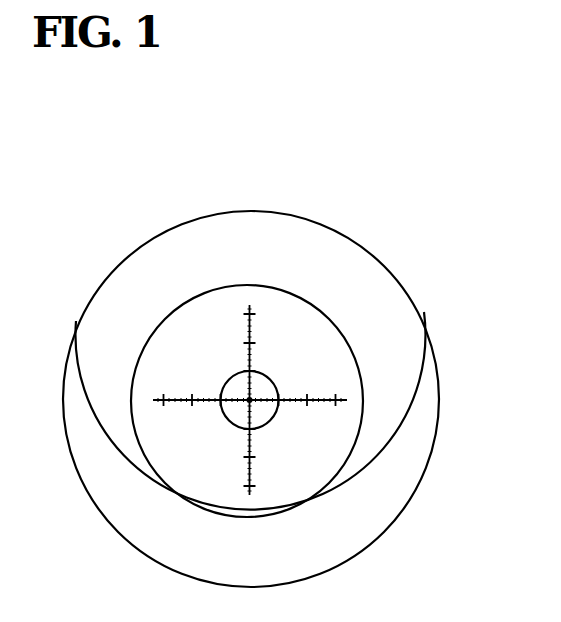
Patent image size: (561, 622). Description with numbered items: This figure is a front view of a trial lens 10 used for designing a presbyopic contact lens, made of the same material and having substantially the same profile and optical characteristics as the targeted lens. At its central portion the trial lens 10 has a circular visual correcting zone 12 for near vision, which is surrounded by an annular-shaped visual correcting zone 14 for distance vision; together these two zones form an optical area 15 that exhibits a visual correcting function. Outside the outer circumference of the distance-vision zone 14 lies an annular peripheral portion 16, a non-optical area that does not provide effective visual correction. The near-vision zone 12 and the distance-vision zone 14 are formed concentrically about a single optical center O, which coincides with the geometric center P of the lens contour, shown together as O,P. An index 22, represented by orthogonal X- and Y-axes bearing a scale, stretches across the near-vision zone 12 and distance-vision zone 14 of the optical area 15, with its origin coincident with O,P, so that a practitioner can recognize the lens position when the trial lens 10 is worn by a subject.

The trial lens 10 is at (345, 202).
The visual correcting zone for near vision 12 is at (262, 417).
The visual correcting zone for distance vision 14 is at (168, 342).
The optical area 15 is at (375, 372).
The annular peripheral portion 16 is at (187, 265).
The index 22 is at (268, 316).
The optical center and geometric center O,P is at (264, 383).